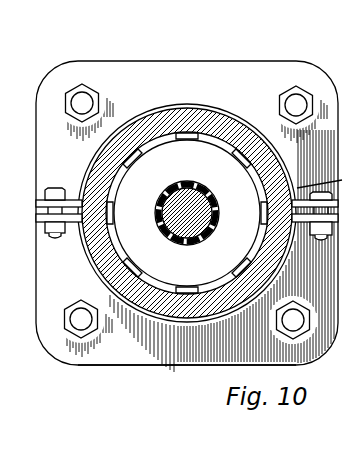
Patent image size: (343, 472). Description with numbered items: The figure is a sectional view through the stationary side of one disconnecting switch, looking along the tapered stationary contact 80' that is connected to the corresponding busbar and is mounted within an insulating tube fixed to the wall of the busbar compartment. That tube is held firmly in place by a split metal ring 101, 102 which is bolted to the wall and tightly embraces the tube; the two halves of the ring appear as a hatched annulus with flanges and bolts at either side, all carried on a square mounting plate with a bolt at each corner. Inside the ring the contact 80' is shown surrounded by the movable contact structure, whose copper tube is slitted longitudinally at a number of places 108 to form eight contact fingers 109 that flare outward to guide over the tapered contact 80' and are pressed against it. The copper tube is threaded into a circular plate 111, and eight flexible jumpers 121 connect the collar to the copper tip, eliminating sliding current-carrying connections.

The split metal ring 101 is at (198, 73).
The split metal ring 102 is at (125, 350).
The circular plate 111 is at (170, 150).
The flexible jumpers 121 is at (250, 130).
The longitudinal slits 108 is at (189, 183).
The contact fingers 109 is at (214, 204).
The stationary contact 80' is at (187, 217).